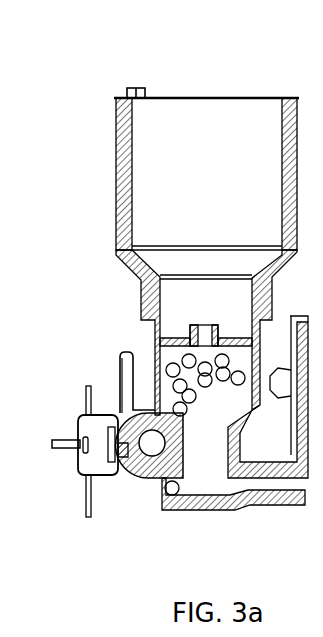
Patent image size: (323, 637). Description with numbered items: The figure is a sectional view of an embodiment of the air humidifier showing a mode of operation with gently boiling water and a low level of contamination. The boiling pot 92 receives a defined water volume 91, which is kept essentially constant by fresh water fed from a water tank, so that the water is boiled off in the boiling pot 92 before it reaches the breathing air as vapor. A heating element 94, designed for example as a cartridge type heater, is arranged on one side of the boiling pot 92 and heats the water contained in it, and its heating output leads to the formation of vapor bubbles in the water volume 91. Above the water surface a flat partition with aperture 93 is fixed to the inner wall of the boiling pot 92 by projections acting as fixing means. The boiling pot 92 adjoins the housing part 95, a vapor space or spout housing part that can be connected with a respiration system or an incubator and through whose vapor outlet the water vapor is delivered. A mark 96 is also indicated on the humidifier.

The housing part 95 is at (225, 132).
The boiling pot 92 is at (185, 311).
The partition with aperture 93 is at (190, 337).
The mark 96 is at (158, 374).
The heating element 94 is at (152, 447).
The water volume 91 is at (207, 455).